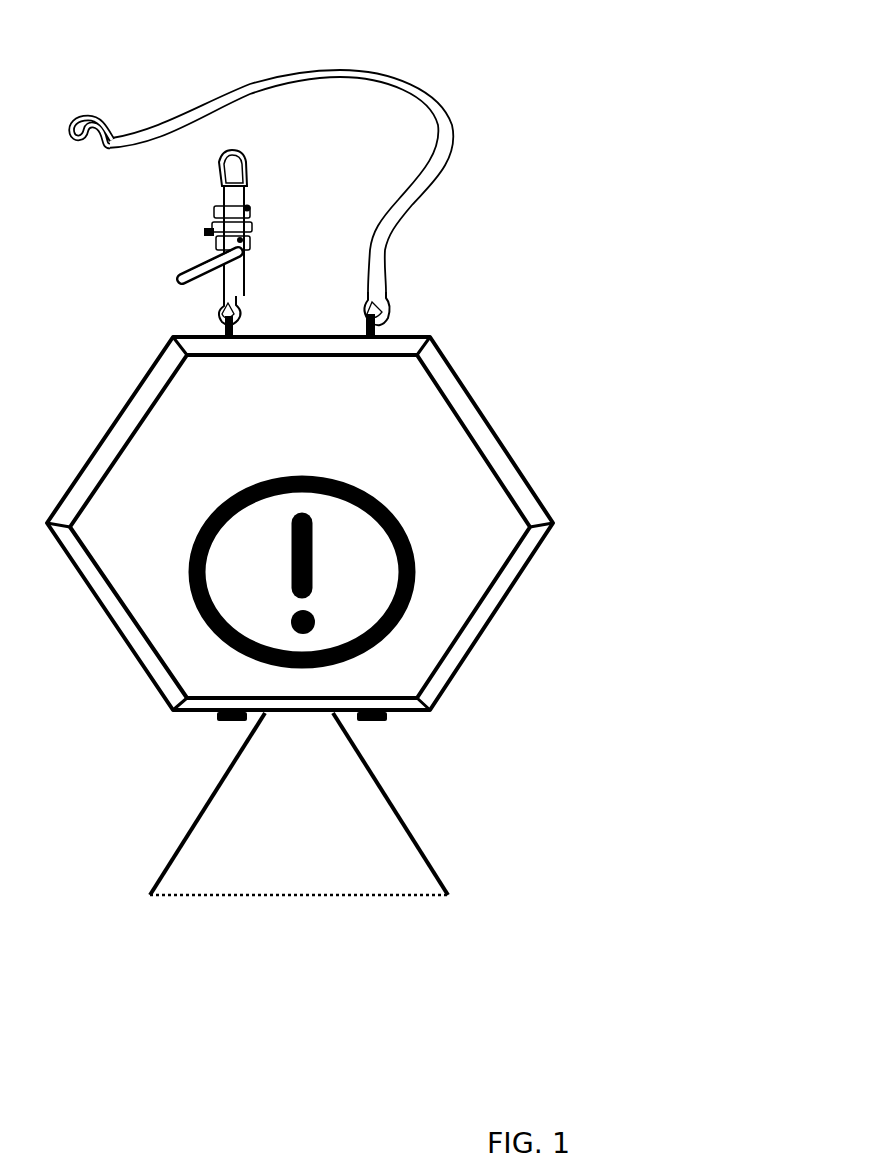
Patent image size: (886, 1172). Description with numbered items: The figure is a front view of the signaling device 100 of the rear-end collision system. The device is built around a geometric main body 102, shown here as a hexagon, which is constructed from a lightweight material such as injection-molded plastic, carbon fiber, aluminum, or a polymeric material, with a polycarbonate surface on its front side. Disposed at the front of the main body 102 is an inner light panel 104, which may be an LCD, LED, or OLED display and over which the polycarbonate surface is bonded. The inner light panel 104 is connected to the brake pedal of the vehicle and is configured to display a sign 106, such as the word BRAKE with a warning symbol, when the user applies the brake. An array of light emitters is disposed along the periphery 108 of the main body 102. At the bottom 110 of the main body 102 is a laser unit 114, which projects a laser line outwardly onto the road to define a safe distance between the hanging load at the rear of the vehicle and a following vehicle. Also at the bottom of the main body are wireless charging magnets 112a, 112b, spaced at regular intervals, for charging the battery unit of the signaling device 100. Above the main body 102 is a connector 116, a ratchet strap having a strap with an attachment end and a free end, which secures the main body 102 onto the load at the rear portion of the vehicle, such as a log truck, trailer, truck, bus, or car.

The signaling device 100 is at (183, 80).
The main body 102 is at (480, 430).
The inner light panel 104 is at (473, 517).
The sign 106 is at (390, 628).
The periphery 108 is at (447, 673).
The bottom 110 is at (432, 710).
The wireless charging magnet 112a is at (370, 723).
The wireless charging magnet 112b is at (213, 722).
The laser unit 114 is at (360, 898).
The connector 116 is at (232, 192).